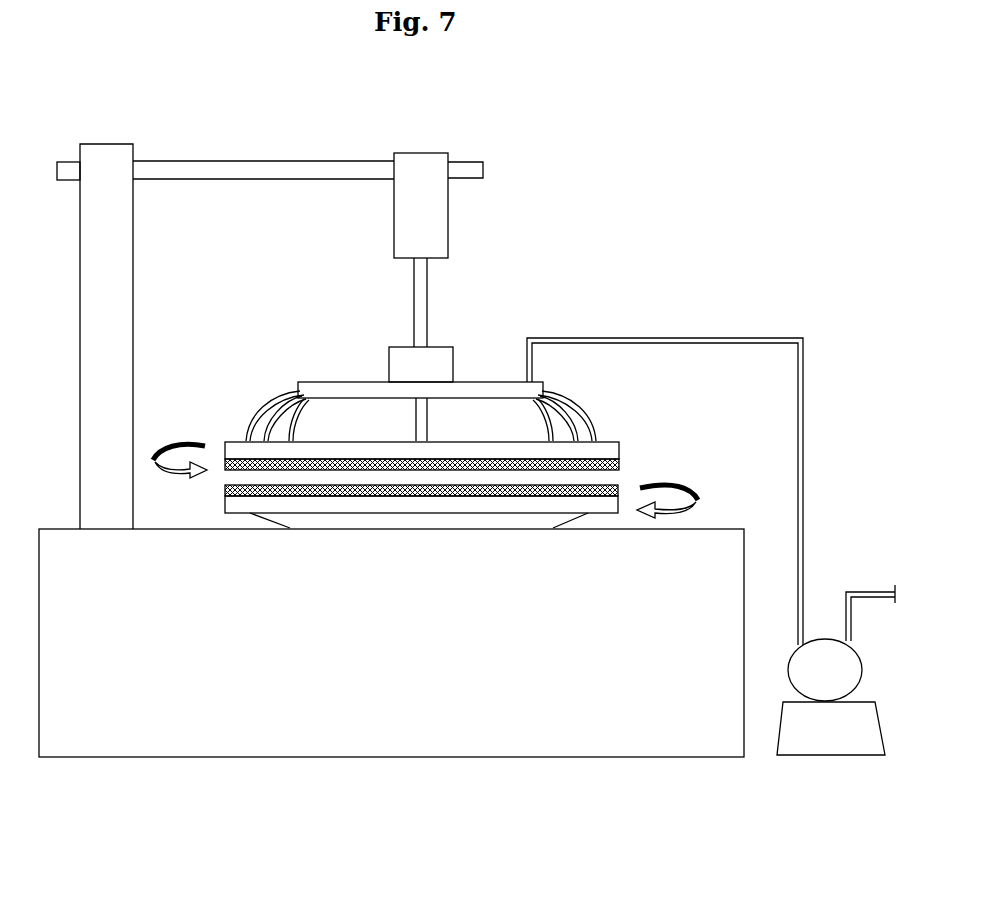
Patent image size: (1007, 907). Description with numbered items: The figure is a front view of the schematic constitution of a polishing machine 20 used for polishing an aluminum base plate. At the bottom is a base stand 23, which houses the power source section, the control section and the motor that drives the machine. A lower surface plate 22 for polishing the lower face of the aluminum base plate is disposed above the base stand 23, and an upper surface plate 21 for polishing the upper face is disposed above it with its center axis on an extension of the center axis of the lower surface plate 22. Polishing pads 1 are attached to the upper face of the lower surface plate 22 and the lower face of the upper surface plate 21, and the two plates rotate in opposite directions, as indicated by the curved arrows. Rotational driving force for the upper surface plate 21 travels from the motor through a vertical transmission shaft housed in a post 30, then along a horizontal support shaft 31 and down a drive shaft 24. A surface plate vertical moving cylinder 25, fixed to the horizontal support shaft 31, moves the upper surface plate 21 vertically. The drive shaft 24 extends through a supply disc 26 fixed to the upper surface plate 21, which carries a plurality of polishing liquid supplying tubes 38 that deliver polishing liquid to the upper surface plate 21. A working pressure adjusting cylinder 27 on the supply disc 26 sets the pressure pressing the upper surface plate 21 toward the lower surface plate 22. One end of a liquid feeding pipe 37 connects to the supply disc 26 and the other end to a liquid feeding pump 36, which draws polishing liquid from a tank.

The polishing pad 1 is at (619, 462).
The polishing machine 20 is at (425, 131).
The upper surface plate 21 is at (616, 446).
The lower surface plate 22 is at (226, 505).
The base stand 23 is at (716, 540).
The drive shaft 24 is at (428, 297).
The surface plate vertical moving cylinder 25 is at (448, 212).
The supply disc 26 is at (360, 382).
The working pressure adjusting cylinder 27 is at (455, 347).
The post 30 is at (108, 157).
The horizontal support shaft 31 is at (222, 173).
The liquid feeding pump 36 is at (863, 668).
The liquid feeding pipe 37 is at (617, 338).
The polishing liquid supplying tube 38 is at (575, 402).